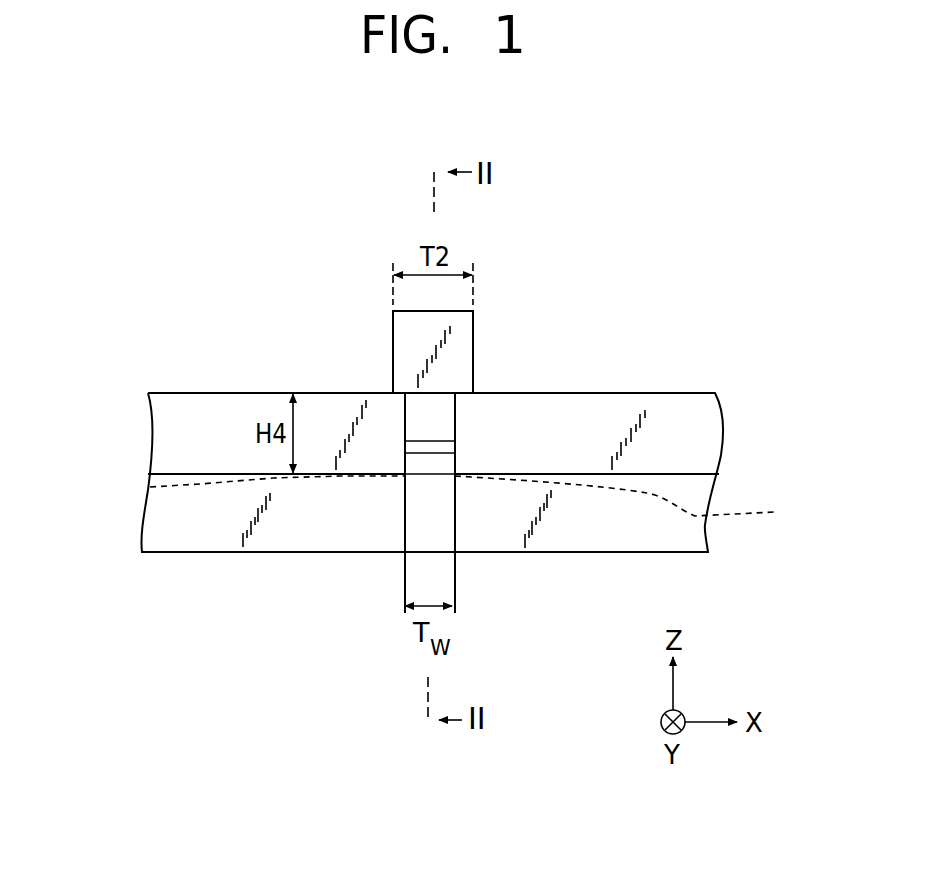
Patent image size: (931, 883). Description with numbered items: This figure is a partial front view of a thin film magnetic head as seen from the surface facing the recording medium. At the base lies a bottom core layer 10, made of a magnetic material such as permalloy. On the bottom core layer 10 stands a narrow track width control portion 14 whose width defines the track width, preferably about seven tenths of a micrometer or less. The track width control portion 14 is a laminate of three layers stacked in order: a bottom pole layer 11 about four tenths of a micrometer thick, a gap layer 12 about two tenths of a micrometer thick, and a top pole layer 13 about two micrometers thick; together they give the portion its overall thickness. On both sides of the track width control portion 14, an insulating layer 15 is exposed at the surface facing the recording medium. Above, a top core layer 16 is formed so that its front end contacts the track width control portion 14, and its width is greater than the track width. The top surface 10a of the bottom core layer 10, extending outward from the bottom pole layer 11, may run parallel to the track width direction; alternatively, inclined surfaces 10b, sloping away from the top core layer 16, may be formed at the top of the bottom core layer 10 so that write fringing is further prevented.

The bottom core layer 10 is at (688, 543).
The top surface 10a is at (192, 474).
The inclined surfaces 10b is at (200, 485).
The bottom pole layer 11 is at (452, 462).
The gap layer 12 is at (452, 447).
The top pole layer 13 is at (469, 379).
The track width control portion 14 is at (519, 450).
The insulating layer 15 is at (187, 411).
The top core layer 16 is at (405, 343).